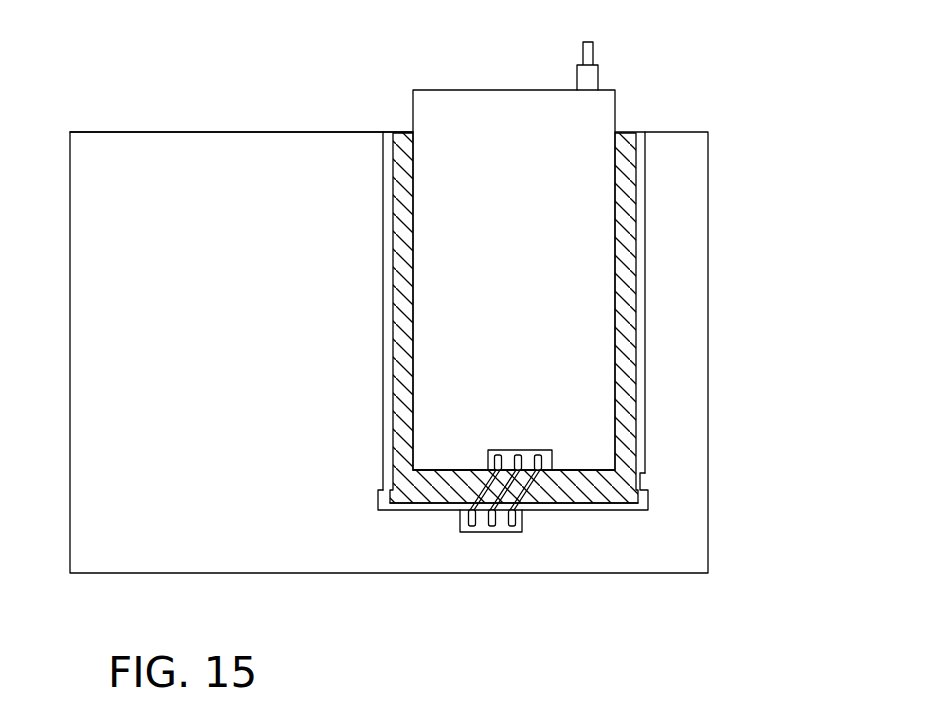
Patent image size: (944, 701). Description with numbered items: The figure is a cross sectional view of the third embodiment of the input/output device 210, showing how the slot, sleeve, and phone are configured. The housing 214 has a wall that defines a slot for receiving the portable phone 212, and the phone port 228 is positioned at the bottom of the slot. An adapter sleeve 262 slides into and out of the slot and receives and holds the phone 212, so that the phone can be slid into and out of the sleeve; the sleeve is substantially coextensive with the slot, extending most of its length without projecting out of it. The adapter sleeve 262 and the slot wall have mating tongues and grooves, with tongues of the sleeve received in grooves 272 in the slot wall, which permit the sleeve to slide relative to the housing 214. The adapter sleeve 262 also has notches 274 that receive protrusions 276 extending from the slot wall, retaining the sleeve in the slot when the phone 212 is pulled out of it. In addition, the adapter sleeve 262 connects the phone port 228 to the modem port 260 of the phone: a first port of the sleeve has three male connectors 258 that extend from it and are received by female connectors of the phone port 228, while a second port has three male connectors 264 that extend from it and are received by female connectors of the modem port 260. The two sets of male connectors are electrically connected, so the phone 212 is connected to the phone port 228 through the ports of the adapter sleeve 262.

The input/output device 210 is at (170, 130).
The housing 214 is at (258, 147).
The portable phone 212 is at (457, 80).
The adapter sleeve 262 is at (640, 225).
The protrusions 276 is at (647, 300).
The notches 274 is at (647, 473).
The grooves 272 is at (615, 500).
The modem port 260 is at (562, 460).
The male connectors 264 is at (529, 458).
The phone port 228 is at (493, 546).
The male connectors 258 is at (460, 517).